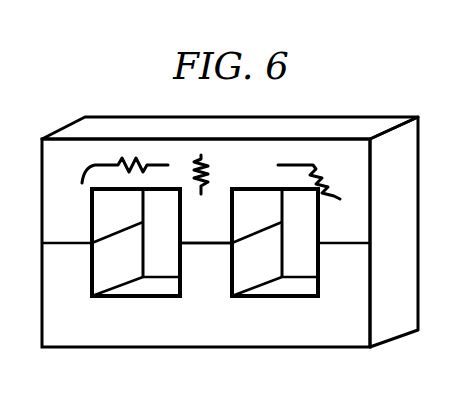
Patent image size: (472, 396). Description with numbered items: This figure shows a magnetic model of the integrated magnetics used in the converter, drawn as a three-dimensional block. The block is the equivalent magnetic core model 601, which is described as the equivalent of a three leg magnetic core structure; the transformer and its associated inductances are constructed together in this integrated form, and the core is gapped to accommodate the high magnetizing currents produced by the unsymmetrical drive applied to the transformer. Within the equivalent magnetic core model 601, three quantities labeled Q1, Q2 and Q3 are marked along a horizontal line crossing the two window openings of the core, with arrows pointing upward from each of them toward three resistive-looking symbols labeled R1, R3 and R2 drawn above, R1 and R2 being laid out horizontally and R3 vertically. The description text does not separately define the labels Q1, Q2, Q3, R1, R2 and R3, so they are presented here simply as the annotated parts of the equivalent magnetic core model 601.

The equivalent magnetic core model 601 is at (170, 393).
The first transistor Q1 is at (66, 214).
The second transistor Q2 is at (343, 214).
The third transistor Q3 is at (205, 214).
The first resistor R1 is at (109, 169).
The second resistor R2 is at (318, 171).
The third resistor R3 is at (215, 169).